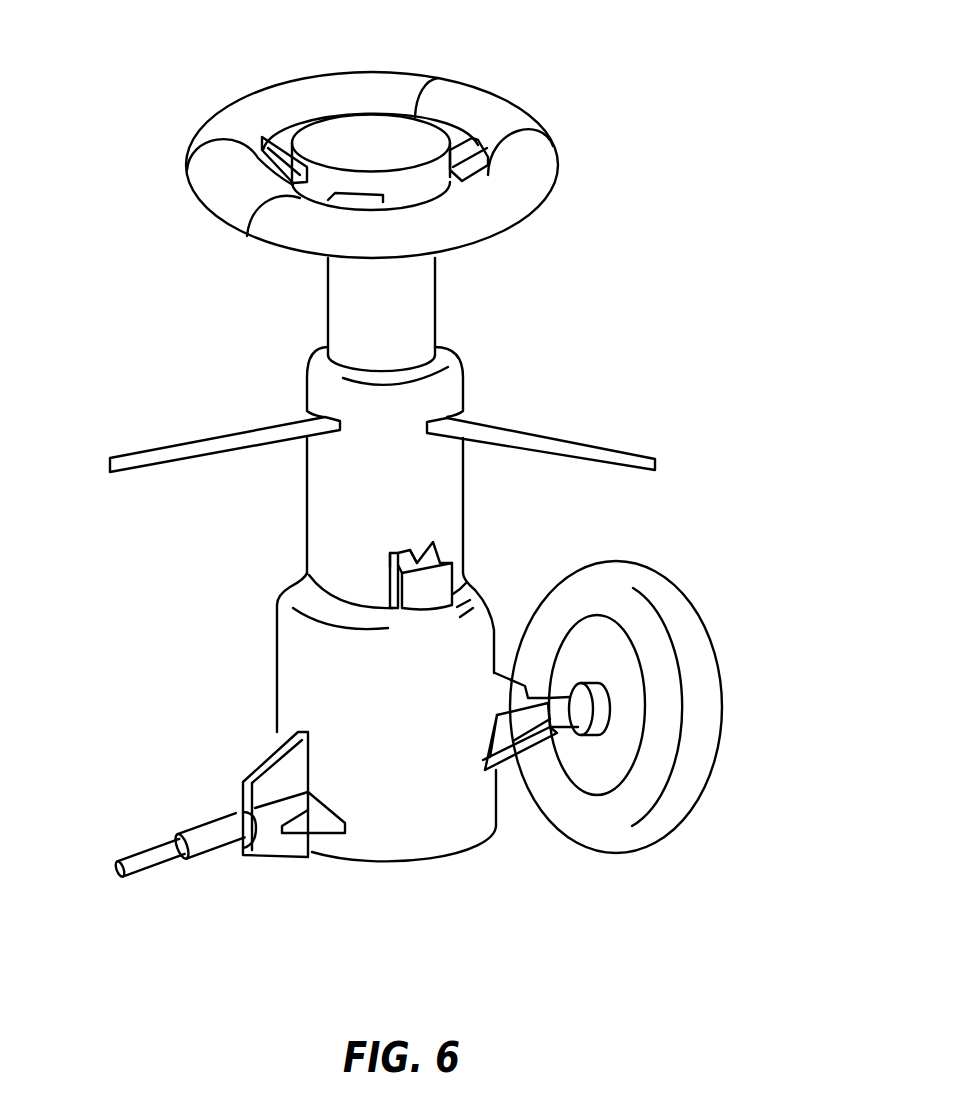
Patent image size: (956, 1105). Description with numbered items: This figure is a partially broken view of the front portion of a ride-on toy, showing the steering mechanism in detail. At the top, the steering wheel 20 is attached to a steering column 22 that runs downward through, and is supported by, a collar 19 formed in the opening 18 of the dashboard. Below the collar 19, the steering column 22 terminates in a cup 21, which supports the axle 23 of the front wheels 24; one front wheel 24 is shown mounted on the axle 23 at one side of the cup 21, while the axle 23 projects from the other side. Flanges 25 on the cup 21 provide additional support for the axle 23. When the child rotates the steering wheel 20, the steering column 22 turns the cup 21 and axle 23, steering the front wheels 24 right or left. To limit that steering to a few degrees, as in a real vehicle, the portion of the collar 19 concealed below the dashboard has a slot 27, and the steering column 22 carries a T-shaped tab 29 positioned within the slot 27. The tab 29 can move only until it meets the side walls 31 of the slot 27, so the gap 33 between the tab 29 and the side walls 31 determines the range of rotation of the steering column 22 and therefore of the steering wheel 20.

The opening 18 is at (373, 370).
The collar 19 is at (440, 452).
The steering wheel 20 is at (368, 87).
The cup 21 is at (432, 840).
The steering column 22 is at (417, 290).
The axle 23 is at (570, 684).
The front wheels 24 is at (700, 667).
The flanges 25 is at (515, 740).
The slot 27 is at (403, 553).
The T-shaped tab 29 is at (437, 588).
The side walls 31 is at (393, 575).
The gap 33 is at (390, 567).